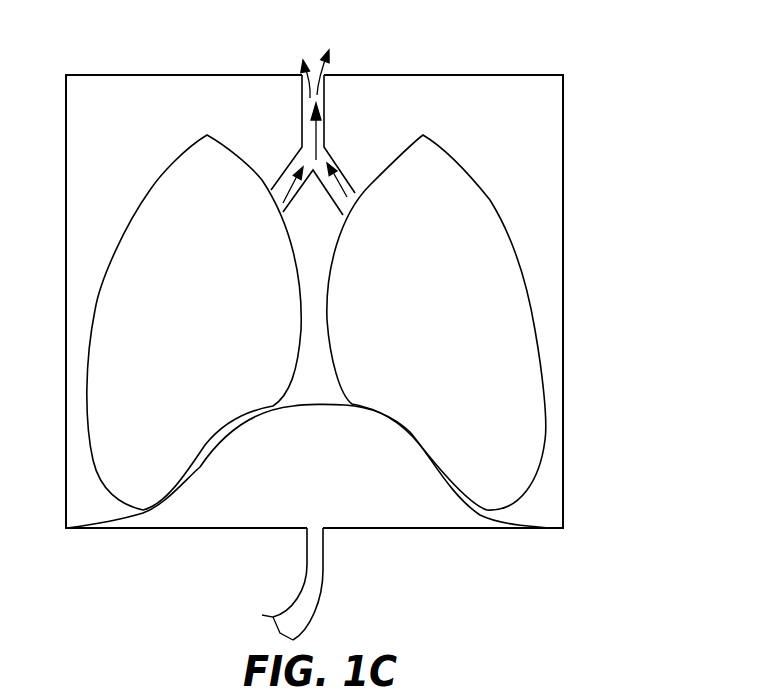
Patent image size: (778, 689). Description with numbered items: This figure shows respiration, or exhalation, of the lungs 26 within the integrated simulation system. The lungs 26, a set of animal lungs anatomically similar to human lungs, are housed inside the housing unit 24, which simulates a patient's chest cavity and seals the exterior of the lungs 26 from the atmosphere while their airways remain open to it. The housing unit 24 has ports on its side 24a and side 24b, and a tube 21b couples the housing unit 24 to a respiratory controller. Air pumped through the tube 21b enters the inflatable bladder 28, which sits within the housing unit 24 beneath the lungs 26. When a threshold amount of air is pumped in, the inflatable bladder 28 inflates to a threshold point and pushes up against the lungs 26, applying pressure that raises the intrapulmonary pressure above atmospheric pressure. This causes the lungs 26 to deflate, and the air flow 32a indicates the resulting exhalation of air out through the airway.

The housing unit 24 is at (563, 118).
The side of housing unit 24a is at (535, 75).
The side of housing unit 24b is at (537, 530).
The lungs 26 is at (150, 228).
The inflatable bladder 28 is at (317, 408).
The tube 21b is at (305, 568).
The air flow 32a is at (313, 130).